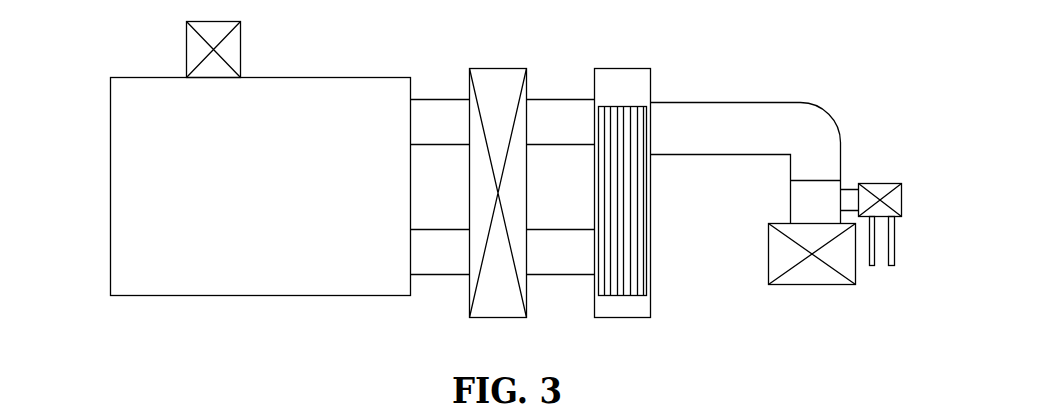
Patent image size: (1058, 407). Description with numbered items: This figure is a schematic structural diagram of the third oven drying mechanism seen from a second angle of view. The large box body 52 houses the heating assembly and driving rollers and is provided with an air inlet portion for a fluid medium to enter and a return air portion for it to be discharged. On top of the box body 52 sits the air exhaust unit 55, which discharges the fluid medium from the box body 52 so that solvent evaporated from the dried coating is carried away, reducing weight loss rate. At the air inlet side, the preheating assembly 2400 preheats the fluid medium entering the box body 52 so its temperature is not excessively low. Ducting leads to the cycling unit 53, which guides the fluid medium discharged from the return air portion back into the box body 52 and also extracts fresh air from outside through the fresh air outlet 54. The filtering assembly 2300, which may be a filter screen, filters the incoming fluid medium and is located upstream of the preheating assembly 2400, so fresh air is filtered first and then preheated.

The box body 52 is at (110, 178).
The air exhaust unit 55 is at (240, 48).
The preheating assembly 2400 is at (498, 290).
The filtering assembly 2300 is at (786, 264).
The cycling unit 53 is at (896, 198).
The fresh air outlet 54 is at (892, 240).